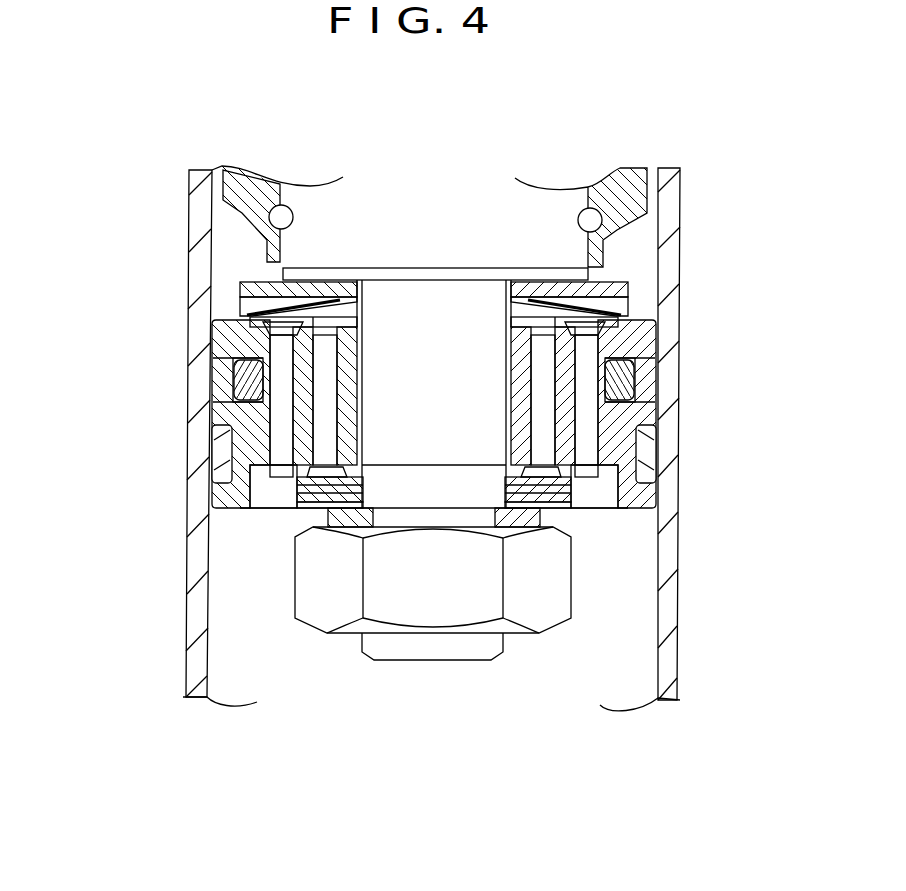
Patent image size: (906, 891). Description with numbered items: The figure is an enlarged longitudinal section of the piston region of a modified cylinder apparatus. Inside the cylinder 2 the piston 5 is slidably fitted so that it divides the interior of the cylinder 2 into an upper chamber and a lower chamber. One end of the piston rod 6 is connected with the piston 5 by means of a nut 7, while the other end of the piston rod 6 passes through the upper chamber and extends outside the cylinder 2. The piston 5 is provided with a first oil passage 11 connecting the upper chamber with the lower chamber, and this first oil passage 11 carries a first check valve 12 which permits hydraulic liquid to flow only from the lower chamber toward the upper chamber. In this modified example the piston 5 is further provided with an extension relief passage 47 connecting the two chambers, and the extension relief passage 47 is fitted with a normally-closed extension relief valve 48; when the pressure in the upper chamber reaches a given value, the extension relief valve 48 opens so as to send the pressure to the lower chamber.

The cylinder 2 is at (668, 275).
The piston 5 is at (230, 417).
The piston rod 6 is at (535, 218).
The nut 7 is at (548, 610).
The first oil passage 11 is at (587, 427).
The first check valve 12 is at (262, 322).
The extension relief passage 47 is at (327, 437).
The extension relief valve 48 is at (297, 493).